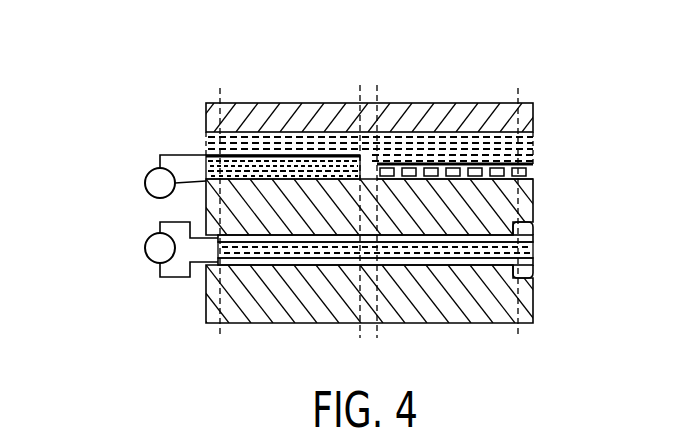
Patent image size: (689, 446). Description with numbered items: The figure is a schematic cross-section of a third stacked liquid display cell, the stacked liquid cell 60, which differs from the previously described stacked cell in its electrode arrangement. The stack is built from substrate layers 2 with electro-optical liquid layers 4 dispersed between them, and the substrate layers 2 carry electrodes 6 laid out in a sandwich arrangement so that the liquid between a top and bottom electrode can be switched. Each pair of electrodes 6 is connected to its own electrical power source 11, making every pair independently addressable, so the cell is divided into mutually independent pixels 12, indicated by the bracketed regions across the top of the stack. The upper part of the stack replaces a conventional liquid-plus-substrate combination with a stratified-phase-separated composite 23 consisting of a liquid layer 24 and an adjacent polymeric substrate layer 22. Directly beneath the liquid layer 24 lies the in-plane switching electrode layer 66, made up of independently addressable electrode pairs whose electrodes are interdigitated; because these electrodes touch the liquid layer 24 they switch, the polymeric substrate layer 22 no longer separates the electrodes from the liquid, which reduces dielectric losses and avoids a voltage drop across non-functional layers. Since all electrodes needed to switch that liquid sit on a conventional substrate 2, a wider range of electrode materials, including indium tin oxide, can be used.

The stacked liquid cell 60 is at (141, 98).
The pixel 12 is at (363, 85).
The stratified-phase-separated composite 23 is at (608, 110).
The polymeric substrate layer 22 is at (528, 117).
The liquid layer 24 is at (528, 148).
The in-plane switching electrode layer 66 is at (528, 174).
The substrate layer 2 is at (510, 199).
The electrode 6 is at (533, 226).
The electro-optical liquid layer 4 is at (533, 250).
The electrical power source 11 is at (145, 183).